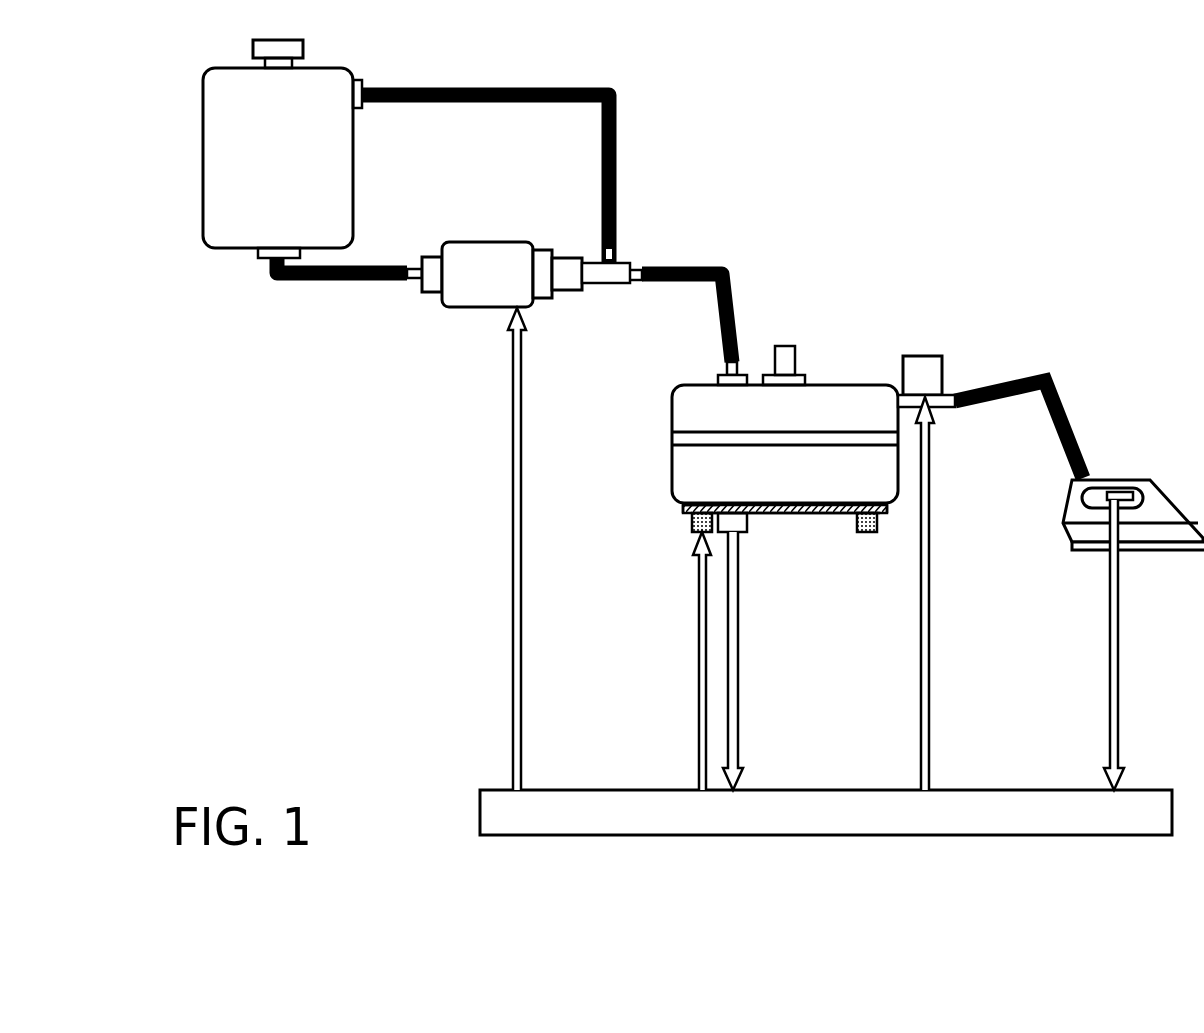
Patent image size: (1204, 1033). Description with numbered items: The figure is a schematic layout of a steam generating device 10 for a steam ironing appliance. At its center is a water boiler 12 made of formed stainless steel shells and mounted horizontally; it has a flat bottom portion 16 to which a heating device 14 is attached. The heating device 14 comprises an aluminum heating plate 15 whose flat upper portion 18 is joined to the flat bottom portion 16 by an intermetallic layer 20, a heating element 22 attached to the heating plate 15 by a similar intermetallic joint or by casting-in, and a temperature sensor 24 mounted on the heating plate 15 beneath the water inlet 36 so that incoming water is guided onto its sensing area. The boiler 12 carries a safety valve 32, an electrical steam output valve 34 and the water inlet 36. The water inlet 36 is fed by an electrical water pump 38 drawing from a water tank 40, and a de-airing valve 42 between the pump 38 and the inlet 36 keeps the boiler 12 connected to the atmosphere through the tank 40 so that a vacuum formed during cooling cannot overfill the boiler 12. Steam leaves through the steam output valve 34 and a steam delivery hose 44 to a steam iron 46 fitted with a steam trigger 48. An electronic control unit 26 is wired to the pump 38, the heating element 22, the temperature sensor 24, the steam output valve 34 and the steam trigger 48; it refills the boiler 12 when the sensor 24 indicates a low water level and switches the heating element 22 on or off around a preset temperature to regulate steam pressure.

The steam generating device 10 is at (997, 172).
The water boiler 12 is at (672, 405).
The heating device 14 is at (815, 515).
The heating plate 15 is at (760, 505).
The flat bottom portion 16 is at (683, 513).
The flat upper portion 18 is at (701, 505).
The intermetallic layer 20 is at (883, 513).
The heating element 22 is at (698, 532).
The temperature sensor 24 is at (742, 532).
The electronic control unit 26 is at (1020, 790).
The safety valve 32 is at (782, 346).
The electrical steam output valve 34 is at (922, 356).
The water inlet 36 is at (730, 272).
The electrical water pump 38 is at (487, 242).
The water tank 40 is at (203, 158).
The de-airing valve 42 is at (613, 256).
The steam delivery hose 44 is at (1003, 378).
The steam iron 46 is at (1085, 552).
The steam trigger 48 is at (1117, 488).